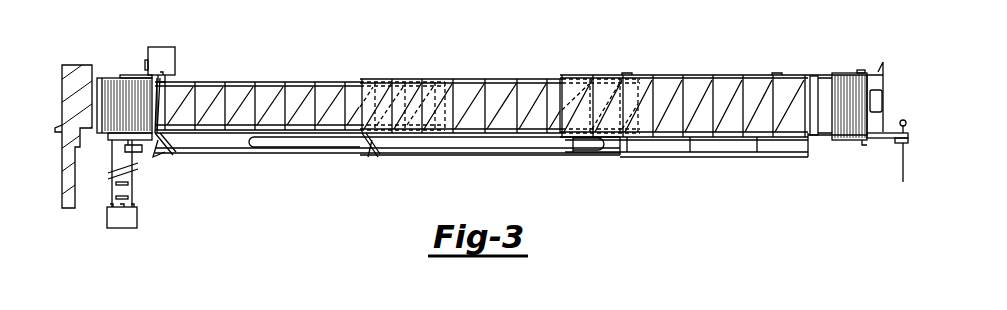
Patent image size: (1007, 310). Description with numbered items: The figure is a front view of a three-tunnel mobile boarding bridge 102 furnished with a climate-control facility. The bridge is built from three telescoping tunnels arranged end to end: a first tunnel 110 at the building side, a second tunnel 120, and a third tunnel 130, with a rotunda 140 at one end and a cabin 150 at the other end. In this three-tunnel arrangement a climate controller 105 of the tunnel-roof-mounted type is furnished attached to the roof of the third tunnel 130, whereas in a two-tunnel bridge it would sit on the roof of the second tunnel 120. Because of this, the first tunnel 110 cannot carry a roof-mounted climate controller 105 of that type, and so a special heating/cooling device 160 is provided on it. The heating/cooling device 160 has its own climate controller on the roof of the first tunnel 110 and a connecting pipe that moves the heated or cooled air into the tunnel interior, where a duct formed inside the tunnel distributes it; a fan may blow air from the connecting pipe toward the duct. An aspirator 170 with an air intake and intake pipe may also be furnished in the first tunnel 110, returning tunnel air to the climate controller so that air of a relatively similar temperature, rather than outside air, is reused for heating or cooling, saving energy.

The 3-tunnel mobile boarding bridge 102 is at (480, 83).
The climate controller 105 is at (627, 75).
The first tunnel 110 is at (302, 82).
The second tunnel 120 is at (493, 78).
The third tunnel 130 is at (700, 75).
The rotunda 140 is at (115, 76).
The cabin 150 is at (848, 73).
The heating/cooling device 160 is at (211, 69).
The sensor 170 is at (178, 42).